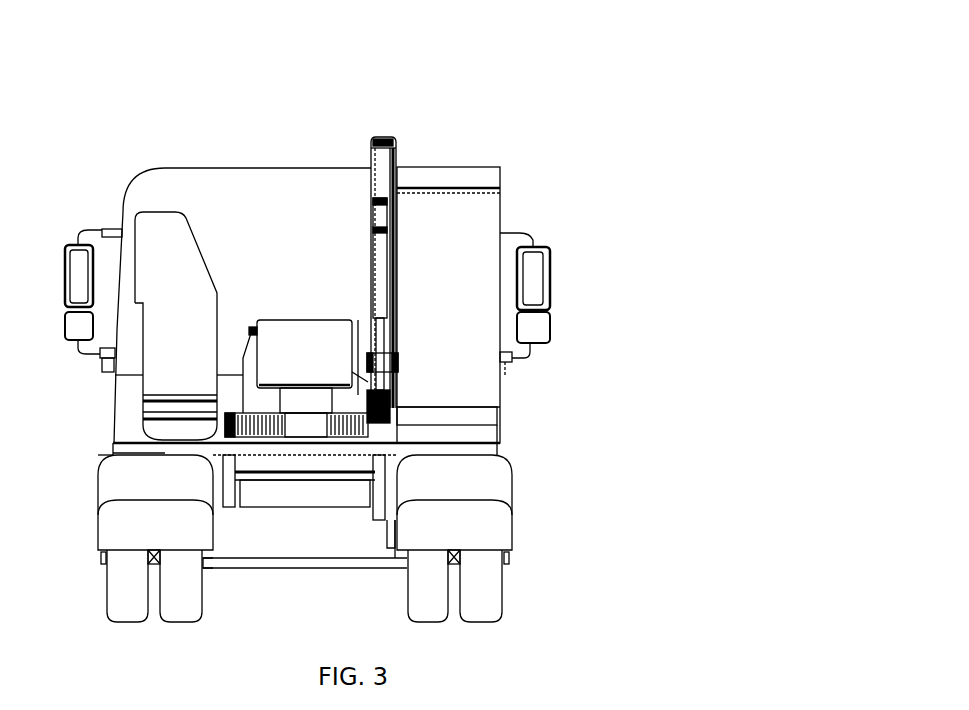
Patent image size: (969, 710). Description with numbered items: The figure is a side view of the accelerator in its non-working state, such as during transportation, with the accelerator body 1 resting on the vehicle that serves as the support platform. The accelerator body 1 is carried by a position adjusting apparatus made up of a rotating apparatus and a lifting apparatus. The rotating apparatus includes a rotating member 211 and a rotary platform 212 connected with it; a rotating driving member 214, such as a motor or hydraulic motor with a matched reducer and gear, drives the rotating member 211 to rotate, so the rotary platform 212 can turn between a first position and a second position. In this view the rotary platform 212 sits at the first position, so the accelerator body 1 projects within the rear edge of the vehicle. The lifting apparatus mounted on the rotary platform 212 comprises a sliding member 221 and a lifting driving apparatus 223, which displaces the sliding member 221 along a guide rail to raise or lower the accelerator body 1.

The accelerator body 1 is at (446, 357).
The rotating member 211 is at (393, 420).
The rotary platform 212 is at (305, 358).
The rotating driving member 214 is at (315, 402).
The sliding member 221 is at (380, 183).
The lifting driving apparatus 223 is at (382, 243).